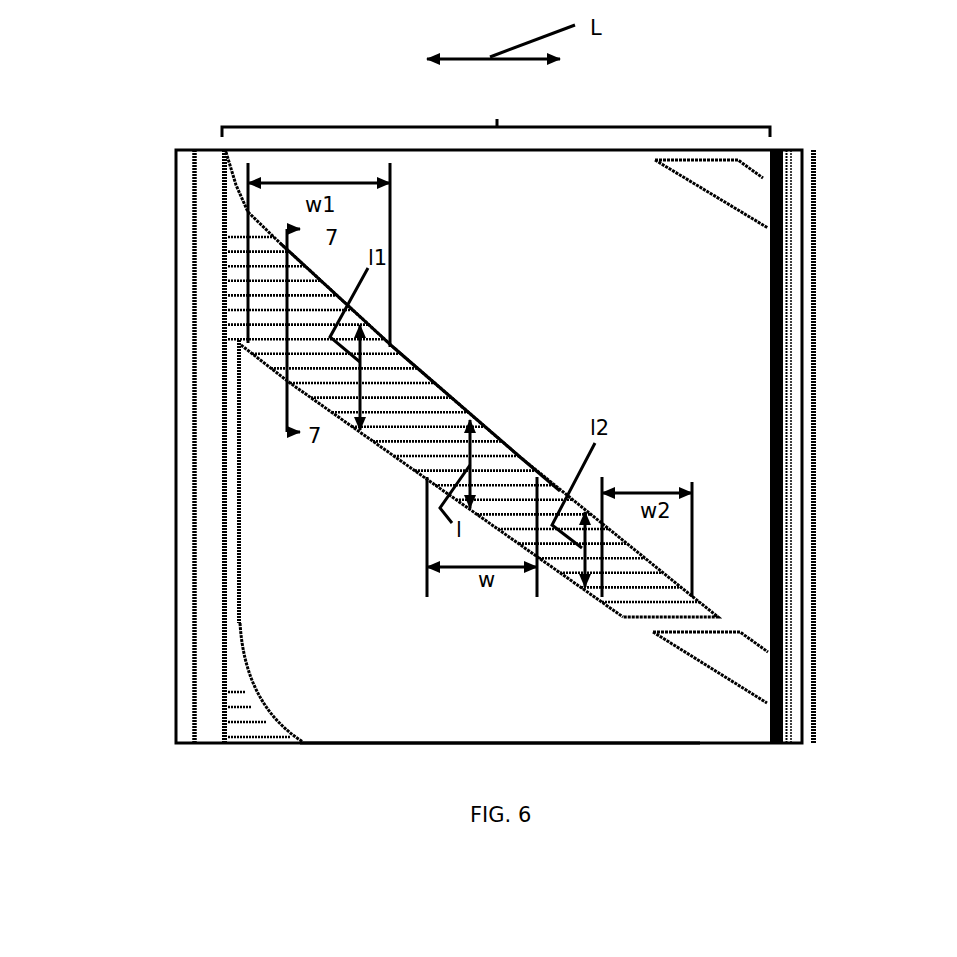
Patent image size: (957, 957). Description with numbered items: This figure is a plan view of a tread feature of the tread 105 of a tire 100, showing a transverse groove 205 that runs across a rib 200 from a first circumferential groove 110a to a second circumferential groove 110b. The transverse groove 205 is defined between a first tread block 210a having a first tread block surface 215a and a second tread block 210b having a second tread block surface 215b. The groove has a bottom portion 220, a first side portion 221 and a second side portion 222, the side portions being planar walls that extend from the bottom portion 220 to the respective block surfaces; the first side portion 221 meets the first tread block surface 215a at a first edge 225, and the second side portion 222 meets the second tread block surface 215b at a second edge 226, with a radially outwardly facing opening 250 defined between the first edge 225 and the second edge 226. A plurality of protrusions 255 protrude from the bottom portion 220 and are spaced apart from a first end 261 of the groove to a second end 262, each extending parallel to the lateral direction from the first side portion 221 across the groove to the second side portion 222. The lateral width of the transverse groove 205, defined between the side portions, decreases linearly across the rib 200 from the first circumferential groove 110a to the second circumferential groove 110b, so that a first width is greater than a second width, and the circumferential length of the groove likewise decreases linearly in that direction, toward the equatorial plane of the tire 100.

The tire 100 is at (155, 568).
The tread 105 is at (444, 720).
The first circumferential groove 110a is at (212, 465).
The second circumferential groove 110b is at (793, 330).
The rib 200 is at (496, 350).
The transverse groove 205 is at (403, 348).
The first tread block 210a is at (633, 288).
The second tread block 210b is at (338, 698).
The first tread block surface 215a is at (603, 250).
The second tread block surface 215b is at (309, 663).
The bottom portion 220 is at (488, 450).
The first side portion 221 is at (462, 406).
The second side portion 222 is at (310, 393).
The first edge 225 is at (463, 412).
The second edge 226 is at (400, 458).
The radially outwardly facing opening 250 is at (540, 453).
The plurality of protrusions 255 is at (387, 412).
The first end 261 is at (218, 268).
The second end 262 is at (737, 662).